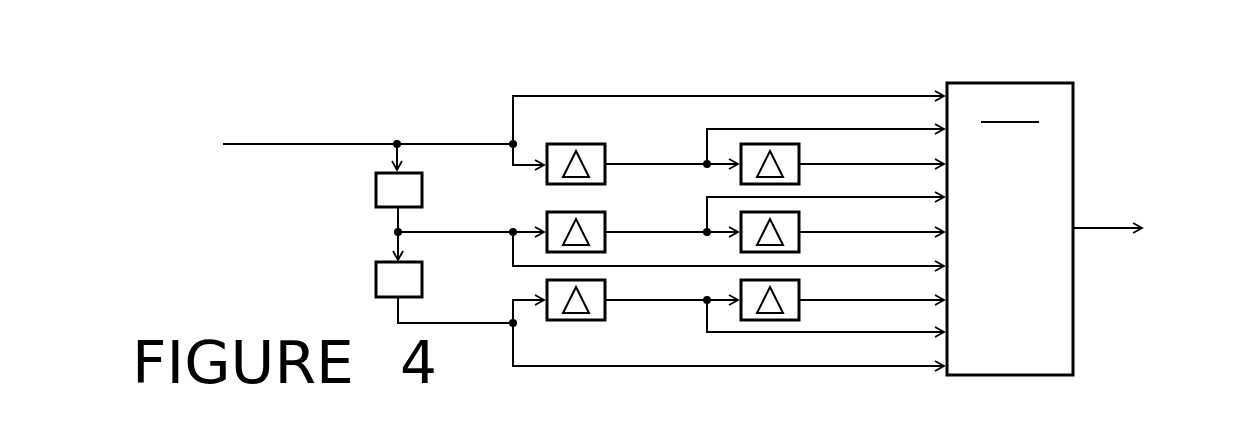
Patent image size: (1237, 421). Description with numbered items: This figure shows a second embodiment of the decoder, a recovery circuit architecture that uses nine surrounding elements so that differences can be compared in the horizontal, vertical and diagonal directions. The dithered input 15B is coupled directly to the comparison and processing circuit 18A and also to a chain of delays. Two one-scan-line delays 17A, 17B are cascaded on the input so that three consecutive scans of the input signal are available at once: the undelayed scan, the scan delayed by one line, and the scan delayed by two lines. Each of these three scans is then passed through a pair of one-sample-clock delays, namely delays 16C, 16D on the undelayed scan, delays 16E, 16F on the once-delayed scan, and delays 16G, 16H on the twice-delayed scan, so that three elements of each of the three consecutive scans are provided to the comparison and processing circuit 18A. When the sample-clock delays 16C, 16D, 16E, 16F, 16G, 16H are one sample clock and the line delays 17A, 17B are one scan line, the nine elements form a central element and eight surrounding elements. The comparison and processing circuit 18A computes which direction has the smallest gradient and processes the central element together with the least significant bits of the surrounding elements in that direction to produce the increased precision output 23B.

The dithered input 15B is at (468, 138).
The one-scan-line delay 17A is at (373, 193).
The one-scan-line delay 17B is at (373, 286).
The one-sample-clock delay 16C is at (607, 148).
The one-sample-clock delay 16D is at (802, 152).
The one-sample-clock delay 16E is at (607, 220).
The one-sample-clock delay 16F is at (802, 217).
The one-sample-clock delay 16G is at (608, 317).
The one-sample-clock delay 16H is at (802, 284).
The comparison and processing circuit 18A is at (1010, 229).
The increased precision output 23B is at (1093, 223).